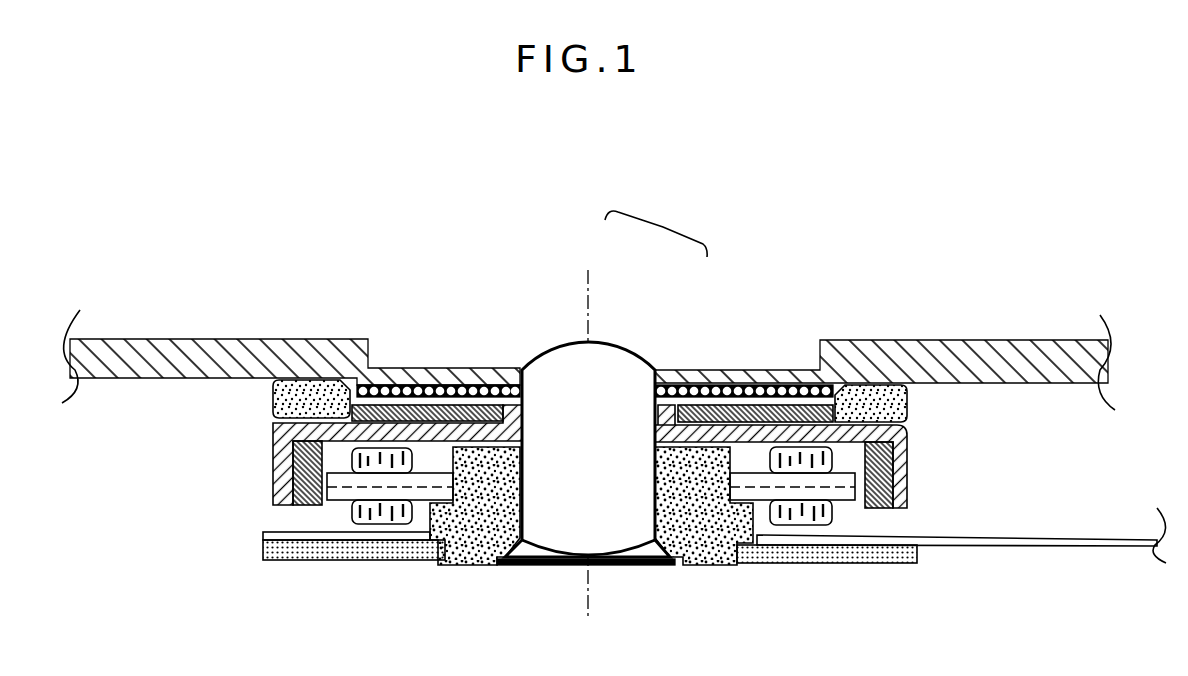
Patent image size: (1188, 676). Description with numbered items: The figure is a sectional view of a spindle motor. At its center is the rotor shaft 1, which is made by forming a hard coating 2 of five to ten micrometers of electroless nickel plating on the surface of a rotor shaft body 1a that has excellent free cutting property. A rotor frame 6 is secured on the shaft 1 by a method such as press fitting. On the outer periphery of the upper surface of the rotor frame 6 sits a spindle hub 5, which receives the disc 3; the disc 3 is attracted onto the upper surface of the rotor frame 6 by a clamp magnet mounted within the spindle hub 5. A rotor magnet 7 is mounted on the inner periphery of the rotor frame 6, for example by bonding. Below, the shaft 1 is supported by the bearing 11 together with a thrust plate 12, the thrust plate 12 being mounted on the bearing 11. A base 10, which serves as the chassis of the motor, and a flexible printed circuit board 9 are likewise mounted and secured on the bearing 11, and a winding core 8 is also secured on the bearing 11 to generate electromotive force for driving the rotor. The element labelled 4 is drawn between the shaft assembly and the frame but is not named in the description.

The rotor shaft 1 is at (663, 227).
The rotor shaft body 1a is at (607, 360).
The hard coating 2 is at (635, 352).
The disc 3 is at (962, 345).
The bearing balls 4 is at (768, 377).
The spindle hub 5 is at (897, 402).
The rotor frame 6 is at (918, 462).
The rotor magnet 7 is at (880, 508).
The winding core 8 is at (843, 493).
The flexible printed circuit board 9 is at (1027, 545).
The base 10 is at (893, 557).
The bearing 11 is at (470, 550).
The thrust plate 12 is at (650, 566).